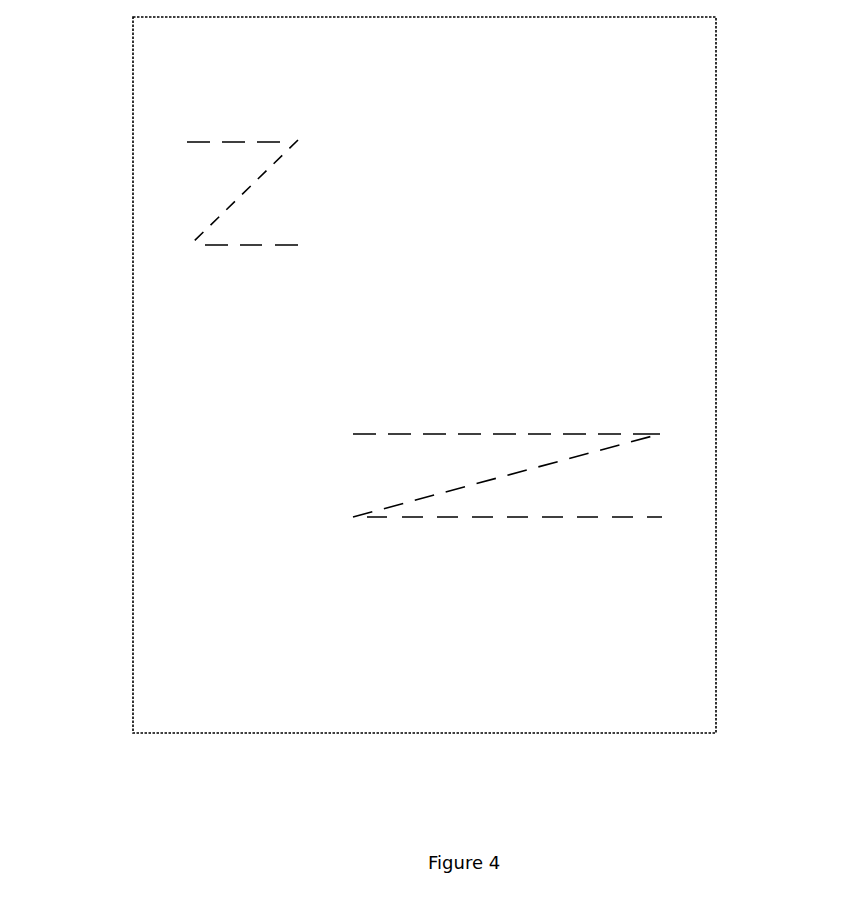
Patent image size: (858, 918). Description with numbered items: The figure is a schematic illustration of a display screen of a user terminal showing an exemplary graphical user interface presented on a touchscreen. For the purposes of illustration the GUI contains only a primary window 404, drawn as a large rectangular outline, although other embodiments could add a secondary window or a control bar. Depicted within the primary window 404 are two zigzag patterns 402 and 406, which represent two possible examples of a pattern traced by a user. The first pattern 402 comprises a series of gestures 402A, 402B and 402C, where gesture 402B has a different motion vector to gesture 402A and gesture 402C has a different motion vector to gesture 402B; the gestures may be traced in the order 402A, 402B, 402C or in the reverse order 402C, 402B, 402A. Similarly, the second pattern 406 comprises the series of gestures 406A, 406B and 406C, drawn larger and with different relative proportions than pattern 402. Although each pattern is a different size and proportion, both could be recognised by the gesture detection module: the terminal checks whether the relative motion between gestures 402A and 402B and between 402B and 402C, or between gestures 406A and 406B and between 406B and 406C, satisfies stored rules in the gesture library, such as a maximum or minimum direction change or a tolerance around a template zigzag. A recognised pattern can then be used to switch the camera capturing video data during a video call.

The zigzag pattern 402 is at (179, 186).
The gesture 402A is at (233, 125).
The gesture 402B is at (255, 193).
The gesture 402C is at (251, 270).
The primary window 404 is at (698, 238).
The zigzag pattern 406 is at (532, 475).
The gesture 406A is at (506, 411).
The gesture 406B is at (390, 495).
The gesture 406C is at (514, 539).